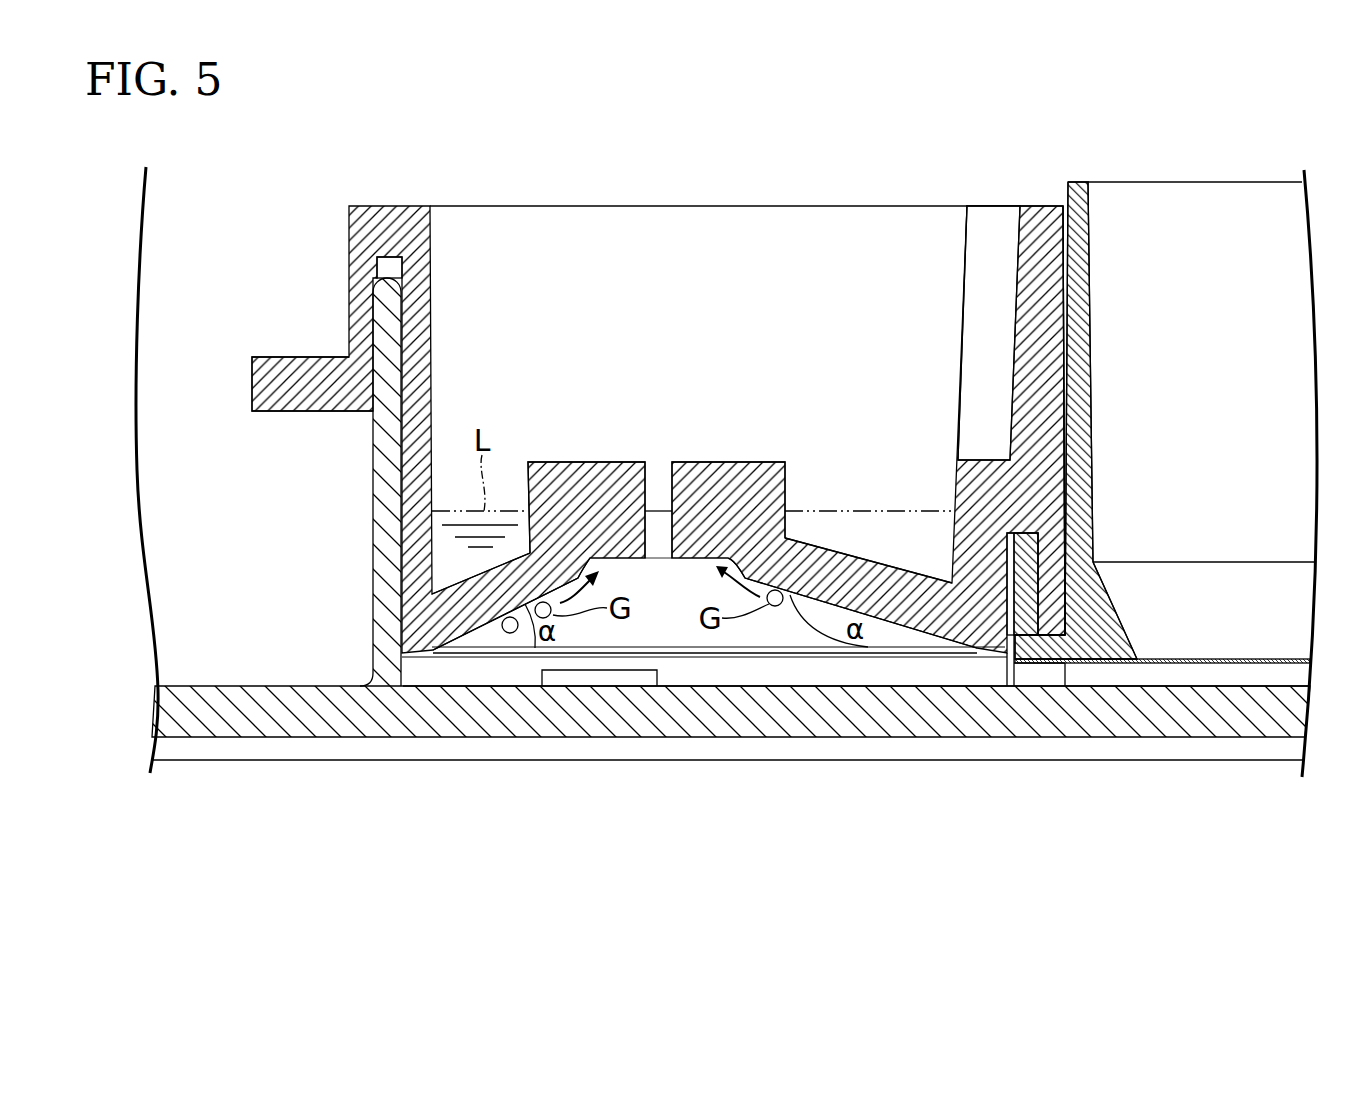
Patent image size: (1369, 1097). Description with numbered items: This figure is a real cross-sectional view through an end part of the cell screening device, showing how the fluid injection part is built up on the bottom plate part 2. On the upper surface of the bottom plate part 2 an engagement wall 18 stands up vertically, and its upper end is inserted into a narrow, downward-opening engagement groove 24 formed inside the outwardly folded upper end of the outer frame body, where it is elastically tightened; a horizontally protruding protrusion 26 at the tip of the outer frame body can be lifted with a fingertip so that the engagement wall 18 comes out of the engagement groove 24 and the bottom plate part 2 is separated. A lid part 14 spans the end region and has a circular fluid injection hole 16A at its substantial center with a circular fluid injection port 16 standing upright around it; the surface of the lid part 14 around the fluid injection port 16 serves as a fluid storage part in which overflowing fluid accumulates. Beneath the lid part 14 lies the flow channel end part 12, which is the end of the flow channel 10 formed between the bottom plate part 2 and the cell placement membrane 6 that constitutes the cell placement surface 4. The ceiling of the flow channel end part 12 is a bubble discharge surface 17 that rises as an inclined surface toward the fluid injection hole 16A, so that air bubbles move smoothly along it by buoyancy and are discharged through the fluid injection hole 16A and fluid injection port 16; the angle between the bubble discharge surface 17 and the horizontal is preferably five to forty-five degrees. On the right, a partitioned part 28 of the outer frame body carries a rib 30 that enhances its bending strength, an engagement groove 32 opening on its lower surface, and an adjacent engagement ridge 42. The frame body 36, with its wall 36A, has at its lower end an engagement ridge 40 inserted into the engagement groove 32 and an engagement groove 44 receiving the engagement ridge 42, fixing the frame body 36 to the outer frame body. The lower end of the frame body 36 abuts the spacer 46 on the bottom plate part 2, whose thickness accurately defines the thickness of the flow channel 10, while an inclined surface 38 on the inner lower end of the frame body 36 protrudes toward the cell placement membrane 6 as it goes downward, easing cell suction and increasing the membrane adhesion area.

The bottom plate part 2 is at (580, 737).
The cell placement surface 4 is at (1278, 659).
The cell placement membrane 6 is at (1226, 650).
The flow channel 10 is at (1180, 673).
The flow channel end part 12 is at (697, 668).
The lid part 14 is at (842, 548).
The fluid injection port 16 is at (780, 462).
The fluid injection hole 16A is at (668, 488).
The bubble discharge surface 17 is at (487, 619).
The engagement wall 18 is at (373, 520).
The engagement groove 24 is at (378, 264).
The protrusion 26 is at (252, 378).
The partitioned part 28 is at (1040, 206).
The rib 30 is at (958, 245).
The engagement groove 32 is at (1014, 550).
The frame body 36 is at (1210, 182).
The wall 36A is at (1078, 182).
The inclined surface 38 is at (1143, 605).
The engagement ridge 40 is at (1012, 620).
The engagement ridge 42 is at (1058, 588).
The engagement groove 44 is at (1048, 623).
The spacer 46 is at (1013, 675).